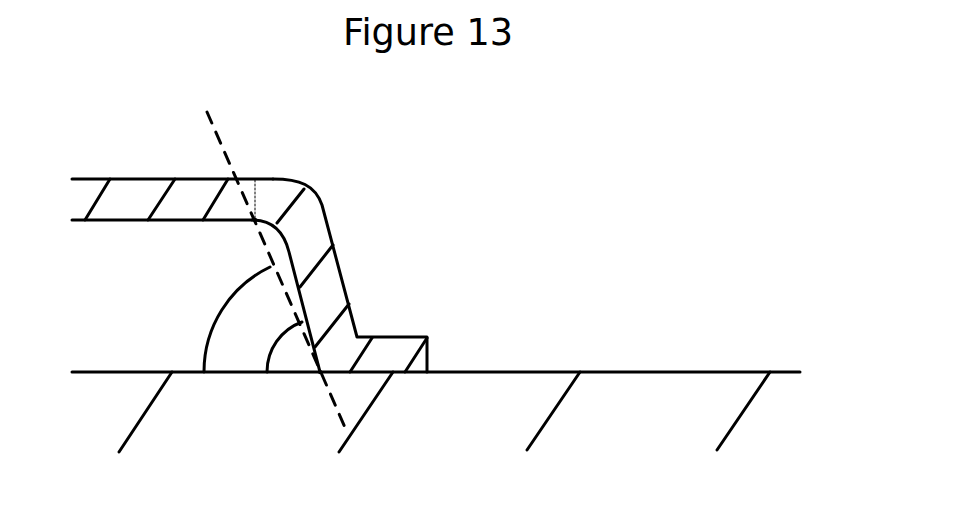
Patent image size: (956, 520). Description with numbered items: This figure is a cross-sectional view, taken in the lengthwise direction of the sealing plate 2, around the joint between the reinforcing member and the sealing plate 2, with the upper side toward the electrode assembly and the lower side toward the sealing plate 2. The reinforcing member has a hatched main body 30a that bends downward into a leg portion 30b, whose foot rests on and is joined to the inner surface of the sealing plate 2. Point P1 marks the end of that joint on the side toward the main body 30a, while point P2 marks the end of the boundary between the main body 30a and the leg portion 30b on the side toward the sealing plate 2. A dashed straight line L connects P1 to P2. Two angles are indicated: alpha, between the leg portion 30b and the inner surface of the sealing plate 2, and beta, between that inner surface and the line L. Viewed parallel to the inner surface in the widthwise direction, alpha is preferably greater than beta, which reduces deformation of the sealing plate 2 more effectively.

The sealing plate 2 is at (445, 440).
The main body 30a is at (133, 200).
The leg portion 30b is at (322, 300).
The straight line L is at (273, 260).
The end of the joint P1 is at (322, 376).
The end of the boundary P2 is at (255, 221).